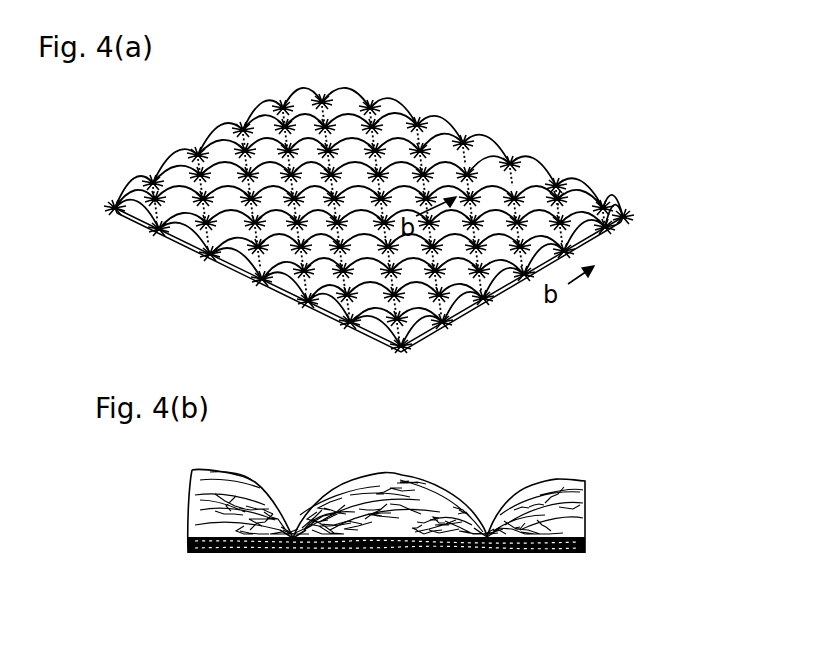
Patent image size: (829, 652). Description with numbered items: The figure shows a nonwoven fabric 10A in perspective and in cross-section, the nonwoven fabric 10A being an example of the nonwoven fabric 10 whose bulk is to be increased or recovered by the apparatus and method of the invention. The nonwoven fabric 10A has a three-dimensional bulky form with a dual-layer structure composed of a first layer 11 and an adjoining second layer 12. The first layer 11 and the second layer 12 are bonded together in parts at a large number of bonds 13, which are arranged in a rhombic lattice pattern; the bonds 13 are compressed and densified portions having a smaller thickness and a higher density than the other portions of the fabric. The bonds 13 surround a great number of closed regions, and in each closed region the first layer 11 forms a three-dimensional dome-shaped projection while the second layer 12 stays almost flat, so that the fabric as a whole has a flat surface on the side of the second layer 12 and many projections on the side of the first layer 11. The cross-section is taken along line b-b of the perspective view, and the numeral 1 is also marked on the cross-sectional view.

In FIG. 4A, the nonwoven fabric 10A is at (452, 100).
In FIG. 4A, the nonwoven fabric 10 is at (369, 217).
In FIG. 4A, the first layer 11 is at (486, 149).
In FIG. 4B, the first layer 11 is at (447, 500).
In FIG. 4A, the second layer 12 is at (235, 267).
In FIG. 4B, the second layer 12 is at (443, 554).
In FIG. 4A, the bonds 13 is at (199, 152).
In FIG. 4B, the bonds 13 is at (295, 533).
In FIG. 4B, the nonwoven fabric 1 is at (390, 472).